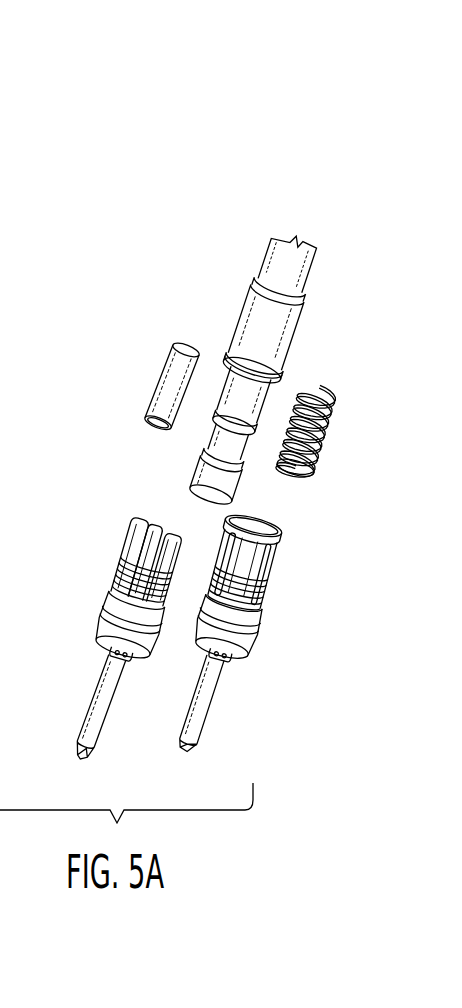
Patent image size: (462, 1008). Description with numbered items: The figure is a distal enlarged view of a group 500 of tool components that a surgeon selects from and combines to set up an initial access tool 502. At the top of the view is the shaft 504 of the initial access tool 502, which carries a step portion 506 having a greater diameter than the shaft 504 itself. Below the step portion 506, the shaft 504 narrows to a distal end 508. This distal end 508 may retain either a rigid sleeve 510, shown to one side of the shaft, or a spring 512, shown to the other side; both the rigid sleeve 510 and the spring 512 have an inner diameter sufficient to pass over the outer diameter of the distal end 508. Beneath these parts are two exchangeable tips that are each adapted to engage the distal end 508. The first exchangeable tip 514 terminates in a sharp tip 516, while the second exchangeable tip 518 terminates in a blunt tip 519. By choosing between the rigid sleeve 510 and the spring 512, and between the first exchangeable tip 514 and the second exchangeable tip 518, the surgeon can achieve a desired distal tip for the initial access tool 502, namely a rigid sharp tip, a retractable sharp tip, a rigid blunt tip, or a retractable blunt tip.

The group of tool components 500 is at (150, 170).
The initial access tool 502 is at (258, 259).
The shaft 504 is at (308, 266).
The step portion 506 is at (290, 338).
The distal end 508 is at (232, 478).
The rigid sleeve 510 is at (165, 388).
The spring 512 is at (333, 428).
The first exchangeable tip 514 is at (121, 537).
The sharp tip 516 is at (76, 750).
The second exchangeable tip 518 is at (264, 639).
The blunt tip 519 is at (185, 755).